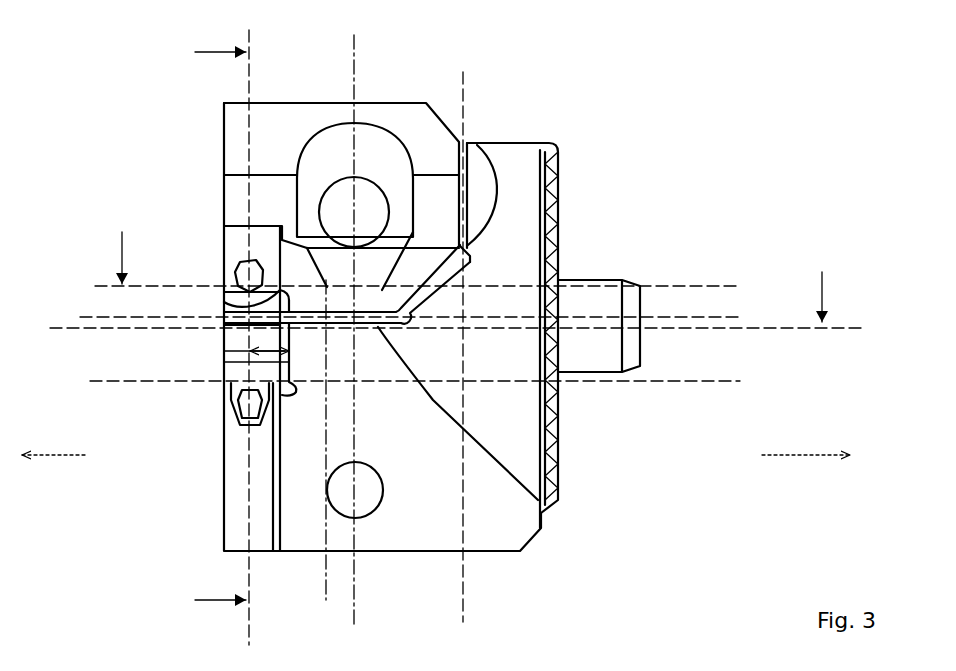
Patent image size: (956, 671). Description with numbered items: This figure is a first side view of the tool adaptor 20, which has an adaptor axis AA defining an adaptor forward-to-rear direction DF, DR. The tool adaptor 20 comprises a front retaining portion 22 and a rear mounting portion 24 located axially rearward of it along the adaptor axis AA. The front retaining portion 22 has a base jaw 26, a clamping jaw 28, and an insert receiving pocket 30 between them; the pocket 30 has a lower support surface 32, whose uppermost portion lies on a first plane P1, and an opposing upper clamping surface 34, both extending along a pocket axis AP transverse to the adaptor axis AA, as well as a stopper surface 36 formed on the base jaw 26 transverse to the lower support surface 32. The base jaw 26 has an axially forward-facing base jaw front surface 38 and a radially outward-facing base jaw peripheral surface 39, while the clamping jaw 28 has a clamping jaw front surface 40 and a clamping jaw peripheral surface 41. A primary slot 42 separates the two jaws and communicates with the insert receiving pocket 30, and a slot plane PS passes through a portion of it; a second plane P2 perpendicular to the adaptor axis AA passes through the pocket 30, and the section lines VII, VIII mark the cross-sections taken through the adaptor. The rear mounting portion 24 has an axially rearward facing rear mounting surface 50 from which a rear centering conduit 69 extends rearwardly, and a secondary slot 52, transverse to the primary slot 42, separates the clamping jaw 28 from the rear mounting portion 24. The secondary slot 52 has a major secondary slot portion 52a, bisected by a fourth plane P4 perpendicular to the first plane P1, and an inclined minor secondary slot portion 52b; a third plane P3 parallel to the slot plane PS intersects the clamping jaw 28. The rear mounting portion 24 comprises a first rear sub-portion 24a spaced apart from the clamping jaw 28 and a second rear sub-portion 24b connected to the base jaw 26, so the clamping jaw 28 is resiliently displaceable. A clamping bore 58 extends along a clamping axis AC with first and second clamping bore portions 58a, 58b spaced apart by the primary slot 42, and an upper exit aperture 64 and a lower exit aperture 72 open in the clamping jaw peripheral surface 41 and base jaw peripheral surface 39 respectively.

The tool adaptor 20 is at (605, 106).
The front retaining portion 22 is at (308, 489).
The rear mounting portion 24 is at (519, 155).
The first rear sub-portion 24a is at (560, 157).
The second rear sub-portion 24b is at (560, 427).
The base jaw 26 is at (236, 536).
The clamping jaw 28 is at (235, 146).
The insert receiving pocket 30 is at (225, 331).
The lower support surface 32 is at (225, 378).
The upper clamping surface 34 is at (224, 312).
The stopper surface 36 is at (282, 352).
The base jaw front surface 38 is at (221, 507).
The base jaw peripheral surface 39 is at (235, 454).
The clamping jaw front surface 40 is at (221, 153).
The clamping jaw peripheral surface 41 is at (233, 186).
The primary slot 42 is at (517, 437).
The rear mounting surface 50 is at (556, 426).
The secondary slot 52 is at (470, 130).
The major secondary slot portion 52a is at (523, 180).
The minor secondary slot portion 52b is at (470, 275).
The clamping bore 58 is at (346, 211).
The first clamping bore portion 58a is at (369, 302).
The second clamping bore portion 58b is at (369, 434).
The upper exit aperture 64 is at (240, 272).
The rear centering conduit 69 is at (599, 361).
The lower exit aperture 72 is at (242, 408).
The adaptor axis AA is at (455, 325).
The clamping axis AC is at (348, 328).
The pocket axis AP is at (240, 353).
The adaptor forward direction DF is at (51, 475).
The adaptor rear direction DR is at (806, 475).
The first plane P1 is at (414, 380).
The second plane P2 is at (253, 336).
The third plane P3 is at (413, 283).
The fourth plane P4 is at (464, 347).
The slot plane PS is at (408, 313).
The section VII is at (204, 326).
The section VIII is at (473, 264).